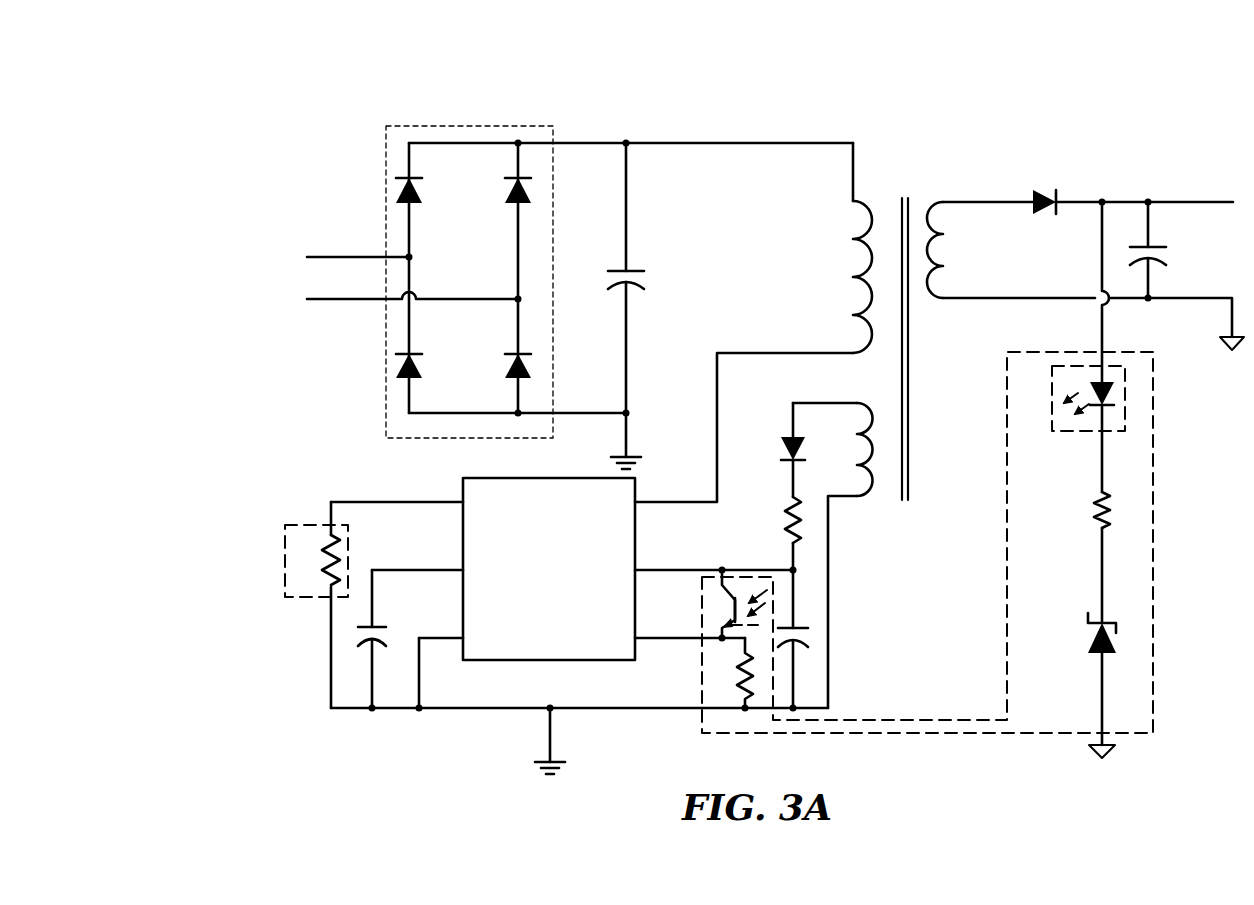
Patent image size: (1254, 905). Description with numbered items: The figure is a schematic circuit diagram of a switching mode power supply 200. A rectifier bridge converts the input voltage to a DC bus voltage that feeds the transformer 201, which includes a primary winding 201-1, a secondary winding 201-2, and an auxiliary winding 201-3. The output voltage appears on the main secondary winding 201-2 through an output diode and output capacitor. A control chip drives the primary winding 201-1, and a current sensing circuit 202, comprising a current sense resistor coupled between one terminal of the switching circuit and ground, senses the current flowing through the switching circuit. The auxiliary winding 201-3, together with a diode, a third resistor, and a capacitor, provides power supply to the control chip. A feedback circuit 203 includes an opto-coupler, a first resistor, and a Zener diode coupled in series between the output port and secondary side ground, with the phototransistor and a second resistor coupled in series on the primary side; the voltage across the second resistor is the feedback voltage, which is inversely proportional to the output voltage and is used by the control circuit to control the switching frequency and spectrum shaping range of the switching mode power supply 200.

The switching mode power supply 200 is at (312, 153).
The transformer 201 is at (865, 425).
The primary winding 201-1 is at (843, 225).
The secondary winding 201-2 is at (948, 313).
The auxiliary winding 201-3 is at (858, 503).
The current sensing circuit 202 is at (296, 600).
The feedback circuit 203 is at (1155, 535).